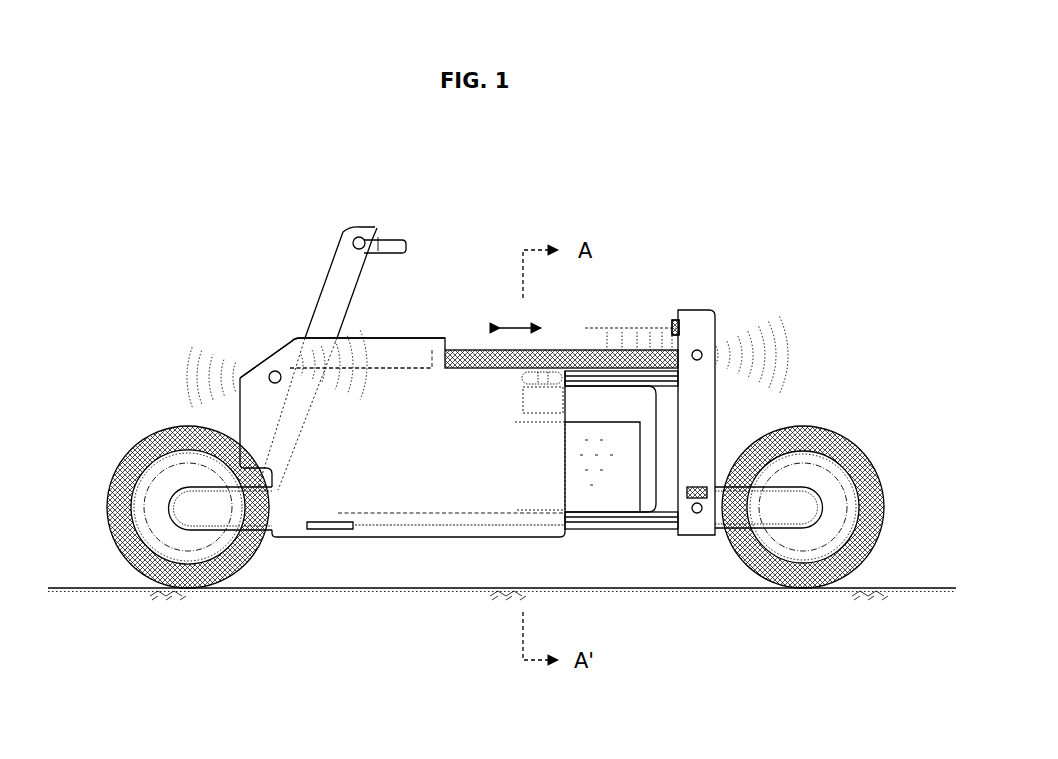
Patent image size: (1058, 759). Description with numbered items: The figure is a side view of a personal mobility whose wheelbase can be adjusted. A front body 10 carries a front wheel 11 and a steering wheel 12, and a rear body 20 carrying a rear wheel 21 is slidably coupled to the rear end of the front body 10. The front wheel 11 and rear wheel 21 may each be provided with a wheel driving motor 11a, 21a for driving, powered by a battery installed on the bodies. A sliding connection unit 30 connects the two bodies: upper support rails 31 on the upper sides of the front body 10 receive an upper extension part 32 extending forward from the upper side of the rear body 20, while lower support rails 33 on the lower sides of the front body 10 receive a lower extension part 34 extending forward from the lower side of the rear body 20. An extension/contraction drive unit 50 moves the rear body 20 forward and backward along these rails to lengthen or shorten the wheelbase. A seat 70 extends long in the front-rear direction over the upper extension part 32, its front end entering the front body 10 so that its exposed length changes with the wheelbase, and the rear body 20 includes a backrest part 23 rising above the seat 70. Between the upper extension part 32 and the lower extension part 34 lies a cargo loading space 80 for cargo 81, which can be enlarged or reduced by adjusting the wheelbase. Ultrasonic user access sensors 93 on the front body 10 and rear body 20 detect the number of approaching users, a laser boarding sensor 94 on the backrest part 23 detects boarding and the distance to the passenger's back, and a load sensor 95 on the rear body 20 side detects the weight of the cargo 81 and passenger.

The front body 10 is at (288, 338).
The front wheel 11 is at (122, 470).
The wheel driving motor 11a is at (148, 508).
The steering wheel 12 is at (366, 227).
The rear body 20 is at (724, 304).
The rear wheel 21 is at (860, 462).
The wheel driving motor 21a is at (840, 490).
The backrest part 23 is at (676, 318).
The sliding connection unit 30 is at (586, 548).
The upper support rails 31 is at (398, 366).
The upper extension part 32 is at (582, 378).
The lower support rails 33 is at (396, 512).
The lower extension part 34 is at (655, 530).
The extension/contraction drive unit 50 is at (518, 400).
The seat 70 is at (468, 350).
The cargo loading space 80 is at (668, 436).
The cargo 81 is at (613, 500).
The user access sensors 93 is at (270, 374).
The boarding sensor 94 is at (673, 326).
The load sensor 95 is at (708, 537).